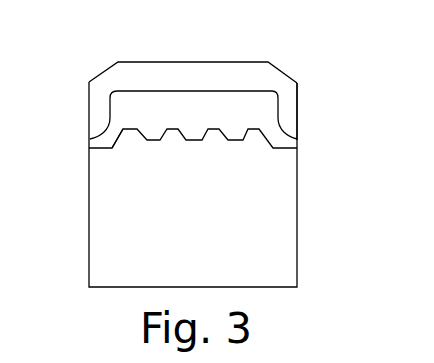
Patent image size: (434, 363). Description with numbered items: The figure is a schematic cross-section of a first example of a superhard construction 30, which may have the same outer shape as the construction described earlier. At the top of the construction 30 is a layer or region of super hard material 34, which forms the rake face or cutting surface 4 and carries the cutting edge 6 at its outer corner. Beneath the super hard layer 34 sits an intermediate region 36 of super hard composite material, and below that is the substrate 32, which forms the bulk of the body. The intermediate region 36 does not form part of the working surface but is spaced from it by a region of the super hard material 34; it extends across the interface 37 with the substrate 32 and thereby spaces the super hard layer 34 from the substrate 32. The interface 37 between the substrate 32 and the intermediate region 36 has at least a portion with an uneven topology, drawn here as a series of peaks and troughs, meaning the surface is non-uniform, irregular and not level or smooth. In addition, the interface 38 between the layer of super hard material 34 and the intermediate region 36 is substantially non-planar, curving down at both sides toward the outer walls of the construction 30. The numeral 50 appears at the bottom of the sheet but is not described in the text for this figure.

The cutting surface 4 is at (202, 62).
The superhard construction 30 is at (207, 143).
The layer of super hard material 34 is at (280, 83).
The cutting edge 6 is at (298, 88).
The interface 38 is at (138, 92).
The intermediate region 36 is at (283, 145).
The interface 37 is at (140, 128).
The substrate 32 is at (297, 192).
The base 50 is at (288, 356).